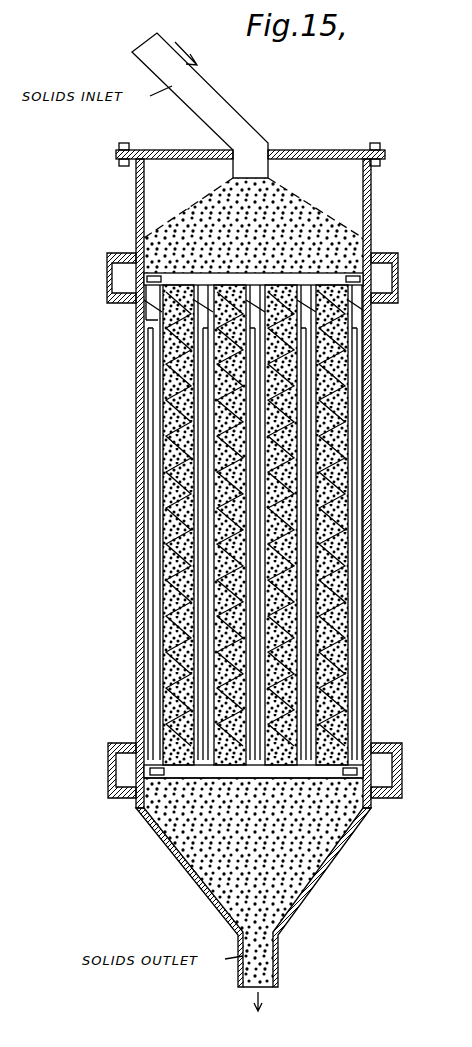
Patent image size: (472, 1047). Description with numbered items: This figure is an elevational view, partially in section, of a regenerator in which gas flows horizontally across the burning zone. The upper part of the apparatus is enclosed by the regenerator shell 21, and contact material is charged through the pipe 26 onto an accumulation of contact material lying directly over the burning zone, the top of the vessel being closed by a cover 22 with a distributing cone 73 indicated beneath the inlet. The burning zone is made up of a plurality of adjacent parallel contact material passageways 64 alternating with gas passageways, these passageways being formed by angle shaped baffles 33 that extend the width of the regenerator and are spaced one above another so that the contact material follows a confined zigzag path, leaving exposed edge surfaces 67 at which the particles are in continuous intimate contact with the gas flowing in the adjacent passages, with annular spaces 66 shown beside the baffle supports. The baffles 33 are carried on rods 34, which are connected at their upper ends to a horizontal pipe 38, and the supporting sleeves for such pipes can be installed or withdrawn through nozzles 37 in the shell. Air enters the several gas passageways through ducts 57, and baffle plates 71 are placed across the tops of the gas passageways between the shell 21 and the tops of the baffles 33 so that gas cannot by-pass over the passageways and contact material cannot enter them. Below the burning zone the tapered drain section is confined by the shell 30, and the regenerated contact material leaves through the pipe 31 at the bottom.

The regenerator shell 21 is at (372, 193).
The top cover plate 22 is at (342, 150).
The pipe 26 is at (228, 99).
The shell 30 is at (207, 898).
The pipe 31 is at (270, 958).
The angle shaped baffles 33 is at (175, 461).
The rods 34 is at (168, 493).
The nozzles 37 is at (122, 262).
The horizontal pipe 38 is at (187, 772).
The ducts 57 is at (153, 598).
The contact material passageways 64 is at (170, 358).
The annular passage 66 is at (165, 383).
The edge surfaces 67 is at (163, 628).
The baffle plates 71 is at (300, 305).
The distributor cone 73 is at (202, 204).